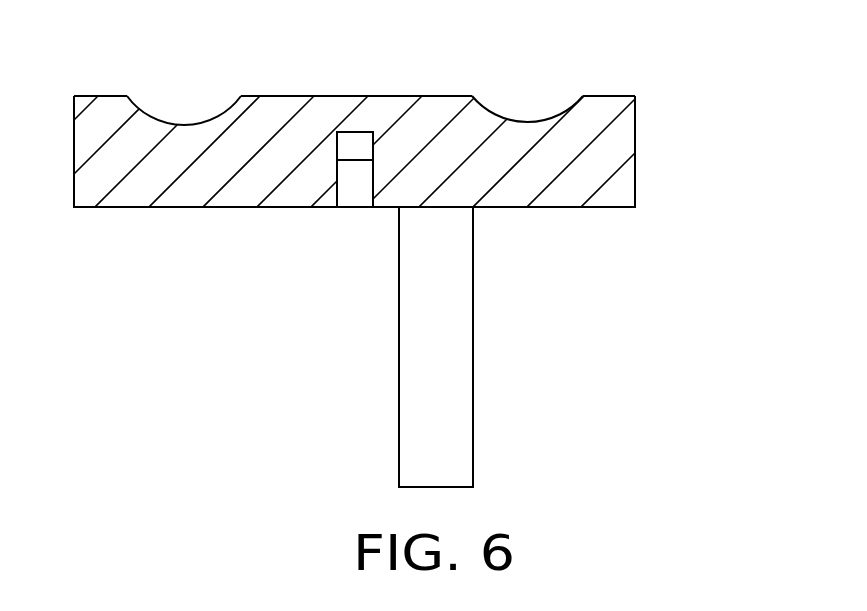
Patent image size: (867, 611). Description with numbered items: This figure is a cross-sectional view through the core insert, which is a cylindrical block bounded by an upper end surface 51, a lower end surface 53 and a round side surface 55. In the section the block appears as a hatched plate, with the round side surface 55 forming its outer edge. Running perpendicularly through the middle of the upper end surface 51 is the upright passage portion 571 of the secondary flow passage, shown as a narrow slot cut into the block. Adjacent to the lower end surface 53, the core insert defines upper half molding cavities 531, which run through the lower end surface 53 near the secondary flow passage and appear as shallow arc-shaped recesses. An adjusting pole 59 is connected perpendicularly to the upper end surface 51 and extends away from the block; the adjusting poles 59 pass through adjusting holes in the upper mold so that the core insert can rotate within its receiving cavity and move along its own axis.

The upper end surface 51 is at (561, 207).
The lower end surface 53 is at (611, 96).
The round side surface 55 is at (636, 134).
The upper half molding cavity 531 is at (180, 110).
The upright passage portion 571 is at (358, 188).
The adjusting pole 59 is at (443, 395).